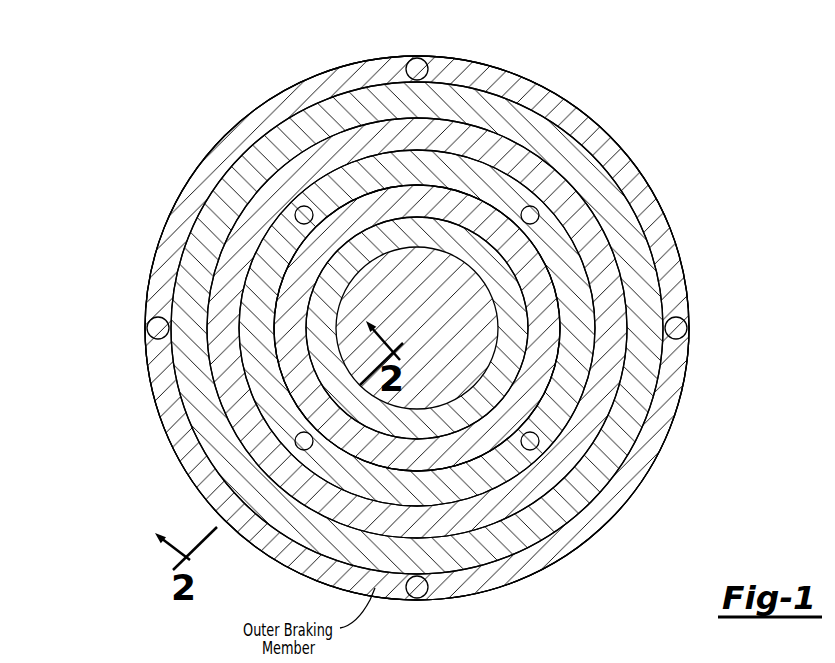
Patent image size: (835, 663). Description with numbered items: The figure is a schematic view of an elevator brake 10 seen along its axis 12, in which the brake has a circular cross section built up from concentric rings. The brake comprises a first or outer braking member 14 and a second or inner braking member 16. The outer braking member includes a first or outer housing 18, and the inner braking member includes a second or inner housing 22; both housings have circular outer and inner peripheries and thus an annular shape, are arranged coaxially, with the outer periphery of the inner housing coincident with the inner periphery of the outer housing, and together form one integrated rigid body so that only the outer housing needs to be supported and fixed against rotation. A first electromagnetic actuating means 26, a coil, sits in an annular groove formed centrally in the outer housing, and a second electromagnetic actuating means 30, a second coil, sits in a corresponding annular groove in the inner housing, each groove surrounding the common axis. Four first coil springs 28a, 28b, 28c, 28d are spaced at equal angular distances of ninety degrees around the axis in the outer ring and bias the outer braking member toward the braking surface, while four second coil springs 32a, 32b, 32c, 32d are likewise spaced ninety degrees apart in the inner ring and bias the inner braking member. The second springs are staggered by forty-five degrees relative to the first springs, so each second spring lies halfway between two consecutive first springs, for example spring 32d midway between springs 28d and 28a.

The elevator brake 10 is at (279, 43).
The axis 12 is at (430, 340).
The first or outer braking member 14 is at (529, 72).
The second or inner braking member 16 is at (264, 385).
The first or outer housing 18 is at (645, 205).
The second or inner housing 22 is at (488, 472).
The first electromagnetic actuating means 26 is at (637, 262).
The first coil spring 28a is at (158, 327).
The first coil spring 28b is at (417, 587).
The first coil spring 28c is at (677, 328).
The first coil spring 28d is at (418, 68).
The second electromagnetic actuating means 30 is at (433, 462).
The second coil spring 32a is at (305, 443).
The second coil spring 32b is at (532, 442).
The second coil spring 32c is at (531, 214).
The second coil spring 32d is at (304, 214).